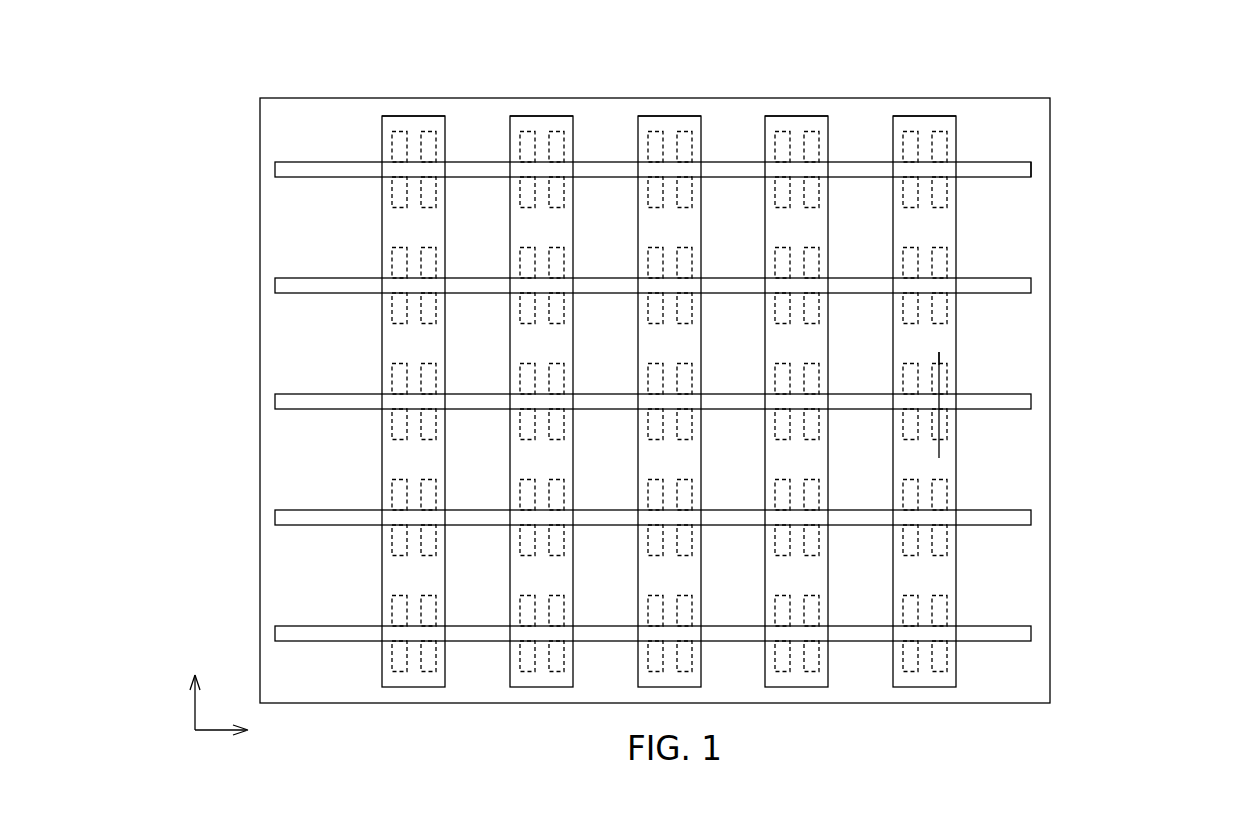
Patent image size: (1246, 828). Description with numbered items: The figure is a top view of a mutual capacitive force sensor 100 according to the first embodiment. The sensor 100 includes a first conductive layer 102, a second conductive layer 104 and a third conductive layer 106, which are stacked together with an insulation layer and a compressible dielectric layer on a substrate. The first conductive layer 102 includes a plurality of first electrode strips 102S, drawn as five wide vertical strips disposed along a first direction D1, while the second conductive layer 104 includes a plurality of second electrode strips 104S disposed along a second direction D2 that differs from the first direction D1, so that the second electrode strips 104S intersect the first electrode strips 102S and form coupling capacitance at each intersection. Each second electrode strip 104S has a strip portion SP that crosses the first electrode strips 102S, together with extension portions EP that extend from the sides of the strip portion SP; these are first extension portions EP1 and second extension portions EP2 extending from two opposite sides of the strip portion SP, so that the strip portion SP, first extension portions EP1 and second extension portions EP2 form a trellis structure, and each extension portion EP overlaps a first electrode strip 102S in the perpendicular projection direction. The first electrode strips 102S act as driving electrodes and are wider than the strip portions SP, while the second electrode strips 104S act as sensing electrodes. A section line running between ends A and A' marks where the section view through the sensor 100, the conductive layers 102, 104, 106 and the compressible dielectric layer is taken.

The mutual capacitive force sensor 100 is at (686, 396).
The first conductive layer 102 is at (947, 117).
The first electrode strips 102S is at (413, 125).
The second conductive layer 104 is at (1021, 278).
The second electrode strips 104S is at (816, 391).
The third conductive layer 106 is at (297, 345).
The extension portions EP is at (777, 396).
The first extension portions EP1 is at (942, 140).
The second extension portions EP2 is at (942, 193).
The strip portion SP is at (1019, 171).
The section line end A is at (971, 412).
The section line end A' is at (974, 354).
The first direction D1 is at (193, 690).
The second direction D2 is at (240, 730).